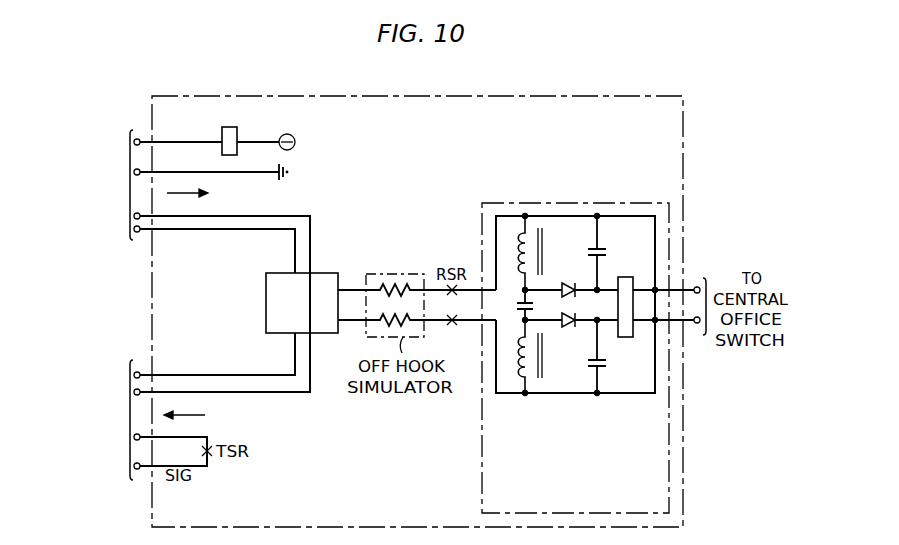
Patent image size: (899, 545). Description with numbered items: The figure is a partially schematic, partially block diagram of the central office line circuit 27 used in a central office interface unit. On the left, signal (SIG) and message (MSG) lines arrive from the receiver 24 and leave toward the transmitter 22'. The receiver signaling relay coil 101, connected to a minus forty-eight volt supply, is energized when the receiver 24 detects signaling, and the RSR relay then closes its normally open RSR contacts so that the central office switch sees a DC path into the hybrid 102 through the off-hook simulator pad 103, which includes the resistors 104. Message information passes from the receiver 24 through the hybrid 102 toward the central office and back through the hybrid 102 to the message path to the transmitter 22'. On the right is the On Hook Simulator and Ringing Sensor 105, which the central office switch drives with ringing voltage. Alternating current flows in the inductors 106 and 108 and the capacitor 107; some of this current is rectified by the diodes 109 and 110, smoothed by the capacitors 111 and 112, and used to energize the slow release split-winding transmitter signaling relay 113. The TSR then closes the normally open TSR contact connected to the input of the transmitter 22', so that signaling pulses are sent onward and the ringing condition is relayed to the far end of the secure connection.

The central office line circuit 27 is at (530, 96).
The receiver 24 is at (87, 185).
The transmitter 22' is at (77, 420).
The receiver signaling relay (RSR) coil 101 is at (237, 131).
The hybrid 102 is at (266, 300).
The off-hook simulator pad 103 is at (374, 276).
The resistors 104 is at (402, 312).
The On Hook Simulator and Ringing Sensor 105 is at (482, 488).
The inductor 106 is at (538, 232).
The capacitor 107 is at (517, 305).
The inductor 108 is at (535, 380).
The diode 109 is at (568, 283).
The diode 110 is at (568, 328).
The capacitor 111 is at (607, 250).
The capacitor 112 is at (607, 368).
The transmitter signaling relay (TSR) 113 is at (625, 338).